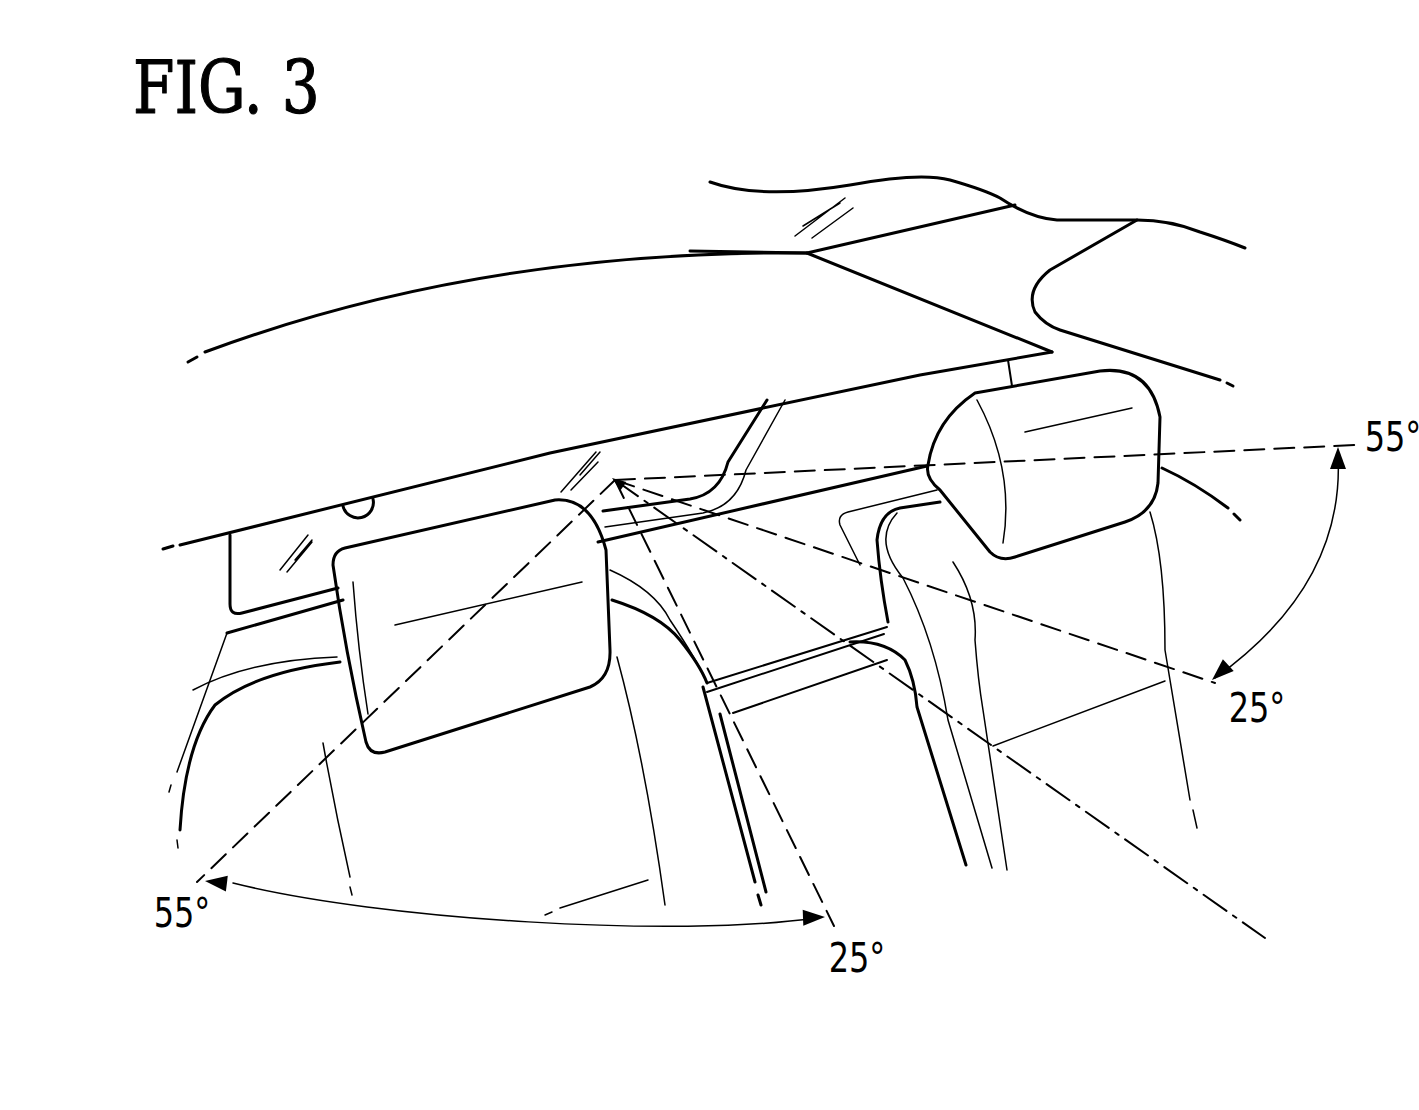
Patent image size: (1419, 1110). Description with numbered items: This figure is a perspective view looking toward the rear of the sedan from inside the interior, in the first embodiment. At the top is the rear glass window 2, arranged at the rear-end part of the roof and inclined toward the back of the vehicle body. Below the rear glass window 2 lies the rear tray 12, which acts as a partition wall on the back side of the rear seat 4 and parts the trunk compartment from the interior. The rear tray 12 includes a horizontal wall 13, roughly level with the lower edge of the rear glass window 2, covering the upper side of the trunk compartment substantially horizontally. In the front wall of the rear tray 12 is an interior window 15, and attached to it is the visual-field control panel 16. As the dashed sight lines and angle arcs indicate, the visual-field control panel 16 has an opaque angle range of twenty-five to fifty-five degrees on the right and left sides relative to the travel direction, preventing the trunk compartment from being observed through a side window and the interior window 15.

The rear glass window 2 is at (903, 203).
The rear tray 12 is at (882, 305).
The horizontal wall 13 is at (500, 303).
The interior window 15 is at (345, 505).
The visual-field control panel 16 is at (452, 500).
The rear seat 4 is at (278, 762).